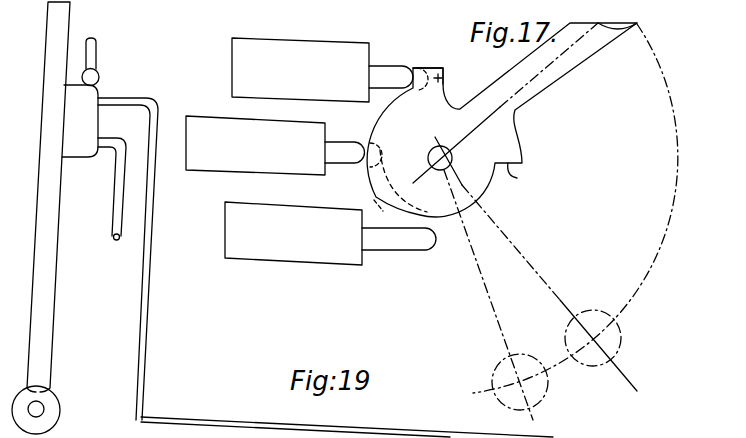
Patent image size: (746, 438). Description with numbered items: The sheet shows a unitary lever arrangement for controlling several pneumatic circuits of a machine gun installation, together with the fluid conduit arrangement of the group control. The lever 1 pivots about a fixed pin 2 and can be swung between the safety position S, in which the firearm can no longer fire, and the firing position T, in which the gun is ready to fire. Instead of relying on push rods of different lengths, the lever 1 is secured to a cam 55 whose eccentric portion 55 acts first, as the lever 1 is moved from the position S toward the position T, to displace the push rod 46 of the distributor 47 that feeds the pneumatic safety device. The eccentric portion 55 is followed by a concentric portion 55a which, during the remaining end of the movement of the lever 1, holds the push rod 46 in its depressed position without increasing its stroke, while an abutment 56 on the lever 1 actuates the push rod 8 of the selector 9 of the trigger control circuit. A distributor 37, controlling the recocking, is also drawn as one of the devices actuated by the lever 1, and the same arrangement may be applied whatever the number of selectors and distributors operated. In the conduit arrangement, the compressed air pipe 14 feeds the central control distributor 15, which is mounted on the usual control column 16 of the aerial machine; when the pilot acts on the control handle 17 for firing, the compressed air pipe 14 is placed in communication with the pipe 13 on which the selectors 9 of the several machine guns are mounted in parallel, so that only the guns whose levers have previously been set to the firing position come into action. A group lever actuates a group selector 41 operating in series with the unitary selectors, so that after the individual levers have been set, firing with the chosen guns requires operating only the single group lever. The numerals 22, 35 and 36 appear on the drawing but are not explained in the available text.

In FIG. 17, the lever 1 is at (553, 70).
In FIG. 17, the fixed pin 2 is at (452, 157).
In FIG. 17, the push rod 8 is at (382, 75).
In FIG. 17, the selector 9 is at (273, 45).
In FIG. 19, the pipe 13 is at (157, 208).
In FIG. 19, the compressed air pipe 14 is at (114, 241).
In FIG. 19, the central control distributor 15 is at (78, 148).
In FIG. 19, the control column 16 is at (60, 230).
In FIG. 19, the control handle 17 is at (96, 53).
In FIG. 17, the notch 22 is at (423, 70).
In FIG. 17, the stop lug 35 is at (529, 179).
In FIG. 17, the plunger of electromagnet 37 36 is at (398, 245).
In FIG. 17, the distributor 37 is at (290, 253).
In FIG. 19, the group selector 41 is at (55, 412).
In FIG. 17, the push rod 46 is at (338, 150).
In FIG. 17, the distributor 47 is at (210, 125).
In FIG. 17, the cam 55 is at (420, 210).
In FIG. 17, the concentric portion 55a is at (367, 177).
In FIG. 17, the abutment 56 is at (442, 77).
In FIG. 17, the firing position T is at (619, 28).
In FIG. 17, the safety position S is at (620, 328).